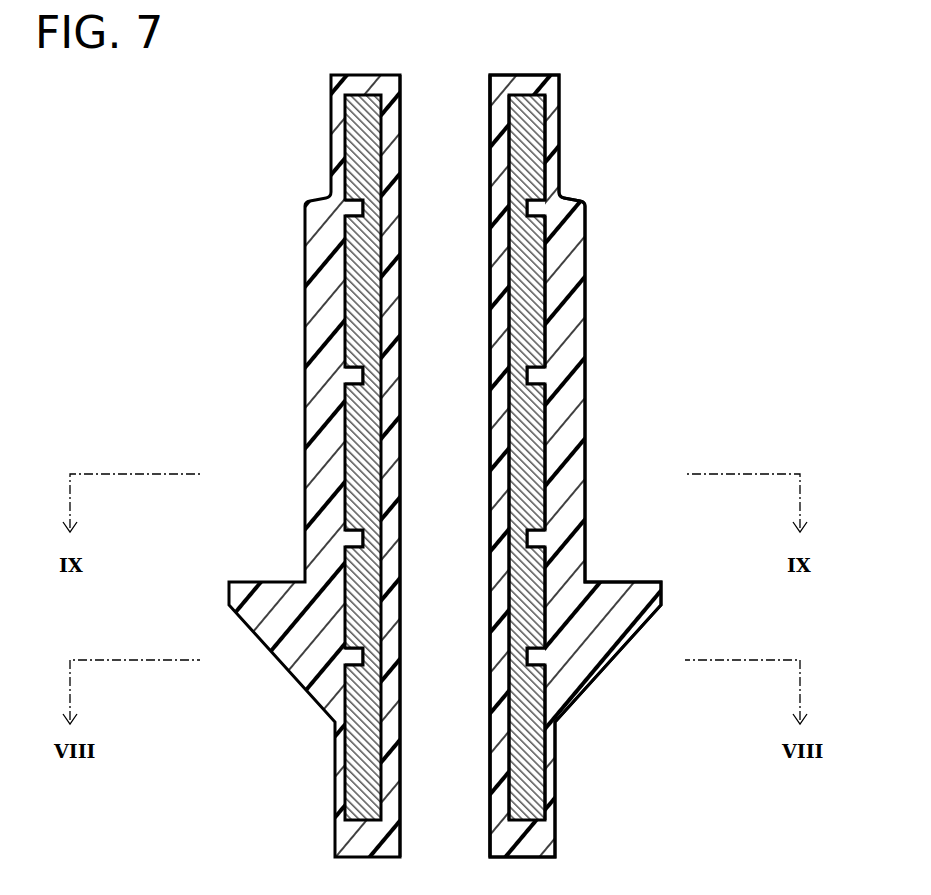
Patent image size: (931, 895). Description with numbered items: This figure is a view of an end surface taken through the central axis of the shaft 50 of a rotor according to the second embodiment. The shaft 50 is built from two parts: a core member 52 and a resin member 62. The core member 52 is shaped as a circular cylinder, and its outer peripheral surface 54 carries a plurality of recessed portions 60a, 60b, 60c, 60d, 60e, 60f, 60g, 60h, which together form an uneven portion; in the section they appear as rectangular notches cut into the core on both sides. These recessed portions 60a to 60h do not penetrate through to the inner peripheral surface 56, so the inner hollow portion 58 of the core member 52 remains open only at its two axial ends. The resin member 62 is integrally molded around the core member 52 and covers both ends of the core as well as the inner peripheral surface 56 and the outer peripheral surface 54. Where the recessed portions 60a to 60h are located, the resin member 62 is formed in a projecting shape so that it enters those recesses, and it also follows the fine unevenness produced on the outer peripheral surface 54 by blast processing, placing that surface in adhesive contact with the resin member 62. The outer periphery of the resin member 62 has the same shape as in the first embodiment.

The shaft 50 is at (740, 62).
The core member 52 is at (530, 94).
The outer peripheral surface 54 is at (547, 112).
The inner peripheral surface 56 is at (510, 114).
The inner hollow portion 58 is at (460, 170).
The recessed portion 60a is at (534, 205).
The recessed portion 60b is at (535, 375).
The recessed portion 60c is at (536, 539).
The recessed portion 60d is at (536, 657).
The recessed portion 60e is at (356, 208).
The recessed portion 60f is at (356, 375).
The recessed portion 60g is at (356, 539).
The recessed portion 60h is at (357, 659).
The resin member 62 is at (566, 128).